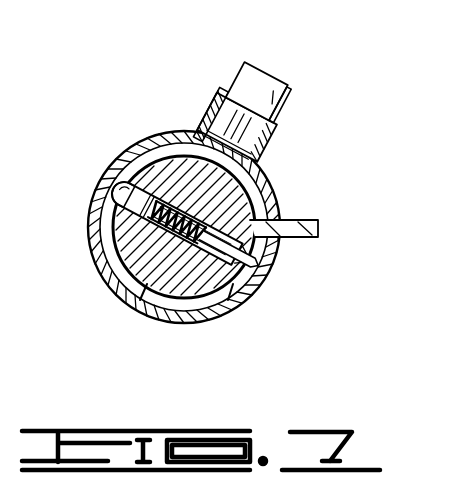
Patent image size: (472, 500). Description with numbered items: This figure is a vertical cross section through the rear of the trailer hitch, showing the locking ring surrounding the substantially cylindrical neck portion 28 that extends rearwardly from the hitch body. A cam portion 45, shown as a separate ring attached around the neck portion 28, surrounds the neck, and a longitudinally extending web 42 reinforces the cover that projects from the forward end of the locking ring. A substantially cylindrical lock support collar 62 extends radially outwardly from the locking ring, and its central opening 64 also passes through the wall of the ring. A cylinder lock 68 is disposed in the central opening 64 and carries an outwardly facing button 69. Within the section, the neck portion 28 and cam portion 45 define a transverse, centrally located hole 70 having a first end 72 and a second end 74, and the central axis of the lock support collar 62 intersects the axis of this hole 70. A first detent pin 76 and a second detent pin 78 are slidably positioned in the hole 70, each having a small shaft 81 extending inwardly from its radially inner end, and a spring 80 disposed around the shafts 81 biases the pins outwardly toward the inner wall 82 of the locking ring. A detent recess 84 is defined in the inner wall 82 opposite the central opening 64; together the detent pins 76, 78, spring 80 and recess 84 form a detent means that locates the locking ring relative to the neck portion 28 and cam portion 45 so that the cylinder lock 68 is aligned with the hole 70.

The neck portion 28 is at (238, 208).
The web 42 is at (306, 238).
The cam portion 45 is at (256, 178).
The lock support collar 62 is at (272, 152).
The central opening 64 is at (228, 96).
The cylinder lock 68 is at (293, 98).
The button 69 is at (268, 72).
The hole 70 is at (137, 267).
The first end 72 is at (121, 188).
The second end 74 is at (258, 278).
The first detent pin 76 is at (120, 198).
The second detent pin 78 is at (232, 296).
The spring 80 is at (196, 218).
The shaft 81 is at (137, 237).
The inner wall 82 is at (192, 323).
The detent recess 84 is at (134, 296).